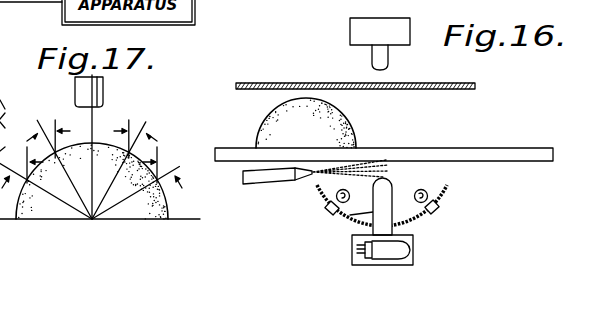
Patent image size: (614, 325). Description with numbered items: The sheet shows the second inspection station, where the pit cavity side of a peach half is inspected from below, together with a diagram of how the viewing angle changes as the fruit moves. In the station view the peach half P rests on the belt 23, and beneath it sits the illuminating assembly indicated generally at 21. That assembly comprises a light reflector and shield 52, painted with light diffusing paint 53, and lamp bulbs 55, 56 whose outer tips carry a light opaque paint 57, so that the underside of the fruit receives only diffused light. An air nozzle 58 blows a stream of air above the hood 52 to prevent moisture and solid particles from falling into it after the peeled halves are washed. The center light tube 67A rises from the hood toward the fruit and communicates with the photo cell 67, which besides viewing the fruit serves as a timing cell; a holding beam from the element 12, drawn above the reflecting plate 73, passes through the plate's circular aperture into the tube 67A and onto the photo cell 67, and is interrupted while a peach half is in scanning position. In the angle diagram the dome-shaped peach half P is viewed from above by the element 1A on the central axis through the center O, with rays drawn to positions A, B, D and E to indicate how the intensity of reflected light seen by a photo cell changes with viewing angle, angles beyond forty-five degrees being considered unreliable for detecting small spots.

In FIG. 17, the nozzle 1A is at (103, 88).
In FIG. 17, the dome-shaped workpiece P is at (168, 206).
In FIG. 16, the dome-shaped workpiece P is at (262, 123).
In FIG. 17, the angle position A is at (137, 183).
In FIG. 17, the angle position B is at (124, 169).
In FIG. 17, the angle position D is at (59, 169).
In FIG. 17, the angle position E is at (46, 183).
In FIG. 17, the center position O is at (81, 139).
In FIG. 16, the nozzle head 12 is at (387, 23).
In FIG. 16, the reflecting plate 73 is at (427, 83).
In FIG. 16, the belt 23 is at (492, 153).
In FIG. 16, the air nozzle 58 is at (268, 178).
In FIG. 16, the lamp bulb 55 is at (352, 215).
In FIG. 16, the lamp bulb 56 is at (424, 210).
In FIG. 16, the light diffusing paint 53 is at (436, 191).
In FIG. 16, the light opaque paint 57 is at (357, 189).
In FIG. 16, the light reflector and shield 52 is at (413, 222).
In FIG. 16, the photo cell 67 is at (413, 258).
In FIG. 16, the light tube 67A is at (355, 222).
In FIG. 16, the lighting assembly 21 is at (470, 207).